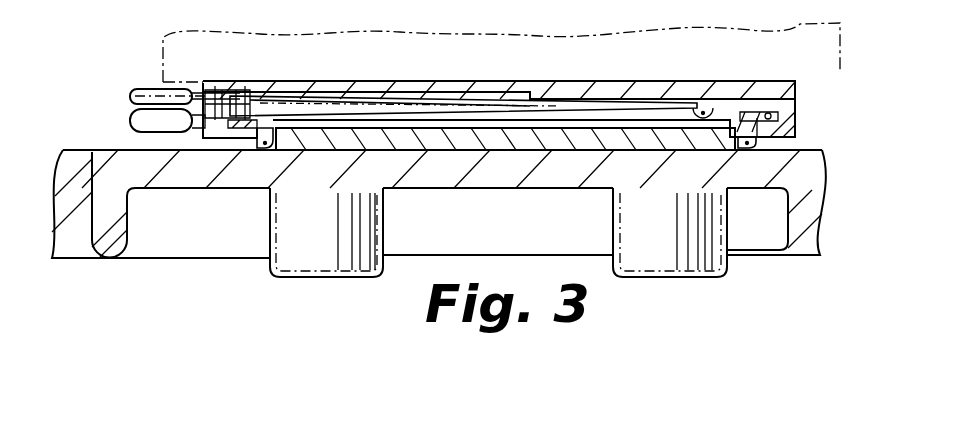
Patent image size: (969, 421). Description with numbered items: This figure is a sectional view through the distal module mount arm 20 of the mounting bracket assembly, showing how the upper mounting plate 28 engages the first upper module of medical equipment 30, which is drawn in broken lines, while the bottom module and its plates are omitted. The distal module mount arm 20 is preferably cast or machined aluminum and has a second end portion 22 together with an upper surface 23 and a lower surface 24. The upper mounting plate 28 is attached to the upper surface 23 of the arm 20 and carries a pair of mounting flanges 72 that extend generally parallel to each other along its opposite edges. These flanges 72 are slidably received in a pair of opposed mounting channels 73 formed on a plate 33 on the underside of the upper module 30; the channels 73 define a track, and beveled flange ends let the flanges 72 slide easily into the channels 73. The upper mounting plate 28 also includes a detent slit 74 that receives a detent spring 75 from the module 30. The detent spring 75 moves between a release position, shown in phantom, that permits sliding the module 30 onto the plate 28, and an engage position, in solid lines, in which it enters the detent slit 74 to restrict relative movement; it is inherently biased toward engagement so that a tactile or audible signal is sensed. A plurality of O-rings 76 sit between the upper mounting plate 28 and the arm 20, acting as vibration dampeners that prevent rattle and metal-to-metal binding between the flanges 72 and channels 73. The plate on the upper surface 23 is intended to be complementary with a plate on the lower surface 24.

The distal module mount arm 20 is at (804, 192).
The second end portion 22 is at (107, 254).
The upper surface 23 is at (117, 148).
The lower surface 24 is at (262, 262).
The upper mounting plate 28 is at (557, 152).
The first upper module of medical equipment 30 is at (840, 70).
The plate with channels 33 is at (589, 82).
The mounting flanges 72 is at (248, 122).
The mounting channels 73 is at (237, 126).
The detent slit 74 is at (215, 118).
The detent spring 75 is at (336, 112).
The O-rings 76 is at (256, 153).